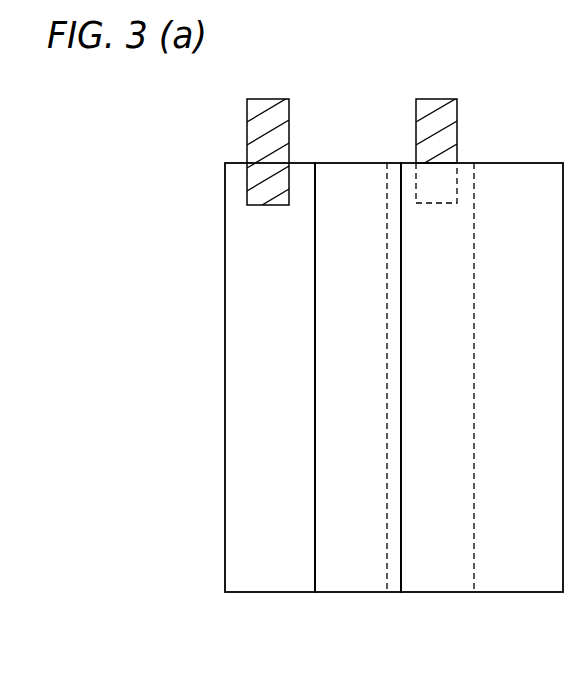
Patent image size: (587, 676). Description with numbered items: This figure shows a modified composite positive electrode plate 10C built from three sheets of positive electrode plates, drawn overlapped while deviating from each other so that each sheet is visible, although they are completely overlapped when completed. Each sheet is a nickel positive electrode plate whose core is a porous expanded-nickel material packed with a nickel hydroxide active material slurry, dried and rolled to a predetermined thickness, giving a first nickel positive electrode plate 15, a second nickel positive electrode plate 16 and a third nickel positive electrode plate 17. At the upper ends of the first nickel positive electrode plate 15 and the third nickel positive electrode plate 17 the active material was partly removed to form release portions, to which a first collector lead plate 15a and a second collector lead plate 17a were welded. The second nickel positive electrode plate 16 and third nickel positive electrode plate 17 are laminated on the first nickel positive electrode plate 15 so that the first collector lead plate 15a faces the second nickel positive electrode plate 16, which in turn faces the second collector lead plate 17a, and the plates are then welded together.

The modified composite positive electrode plate 10C is at (395, 334).
The first nickel positive electrode plate 15 is at (268, 588).
The first collector lead plate 15a is at (275, 103).
The second nickel positive electrode plate 16 is at (355, 588).
The third nickel positive electrode plate 17 is at (530, 587).
The second collector lead plate 17a is at (442, 103).